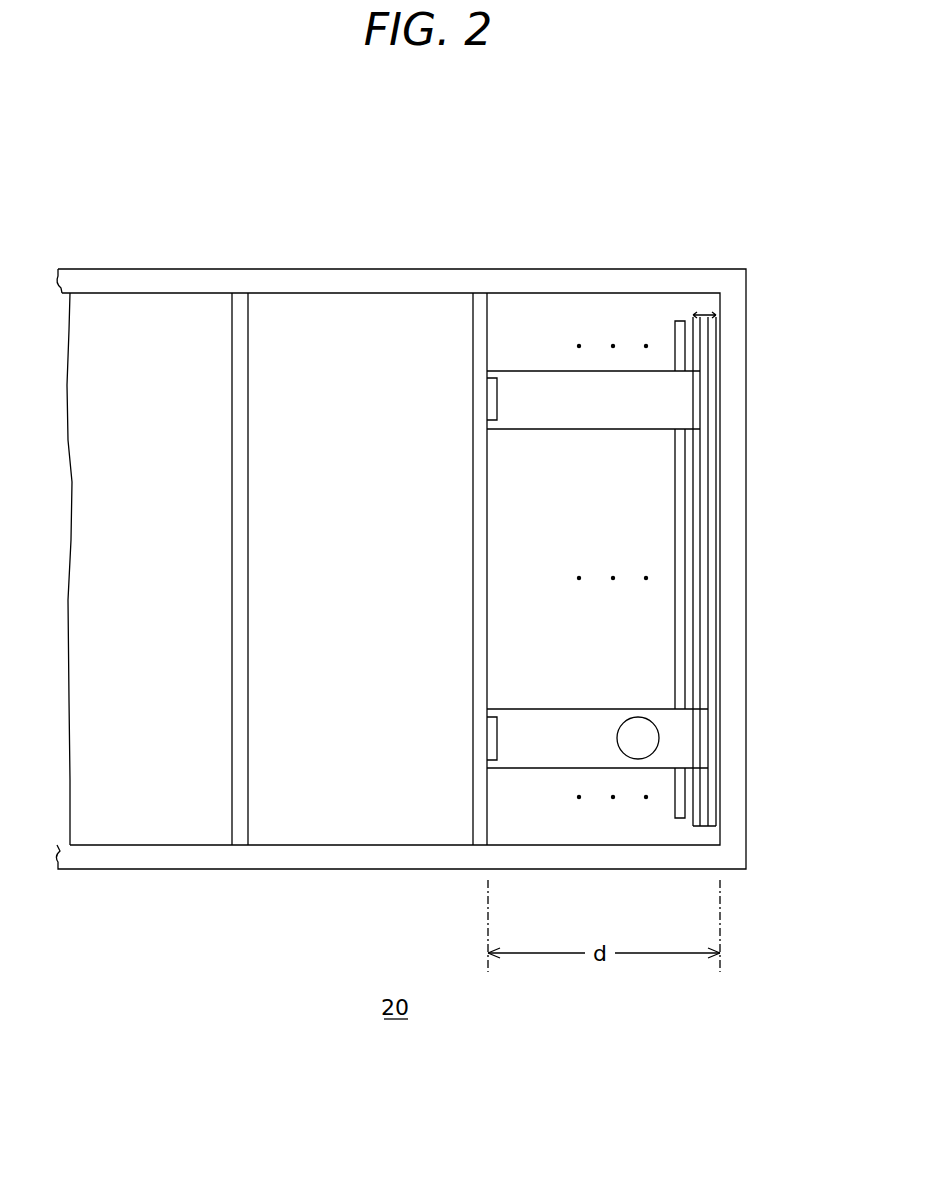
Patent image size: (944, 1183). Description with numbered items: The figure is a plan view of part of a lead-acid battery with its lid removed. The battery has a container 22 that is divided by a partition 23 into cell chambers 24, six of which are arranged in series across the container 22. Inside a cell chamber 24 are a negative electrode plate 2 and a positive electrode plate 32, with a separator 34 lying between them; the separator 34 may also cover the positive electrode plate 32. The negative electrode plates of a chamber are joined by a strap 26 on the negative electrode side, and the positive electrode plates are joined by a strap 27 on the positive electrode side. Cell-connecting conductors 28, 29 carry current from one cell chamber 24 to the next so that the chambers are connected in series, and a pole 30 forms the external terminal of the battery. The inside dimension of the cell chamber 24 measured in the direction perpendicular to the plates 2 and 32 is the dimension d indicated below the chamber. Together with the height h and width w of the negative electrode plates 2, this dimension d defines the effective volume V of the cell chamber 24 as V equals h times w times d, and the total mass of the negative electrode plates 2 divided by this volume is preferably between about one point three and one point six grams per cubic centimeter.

The negative electrode plate 2 is at (705, 622).
The container 22 is at (287, 280).
The partition 23 is at (237, 545).
The cell chamber 24 is at (145, 310).
The strap on the negative electrode side 26 is at (568, 758).
The strap on the positive electrode side 27 is at (593, 414).
The cell-connecting conductor 28 is at (492, 739).
The cell-connecting conductor 29 is at (493, 402).
The pole 30 is at (636, 730).
The positive electrode plate 32 is at (683, 493).
The separator 34 is at (716, 347).